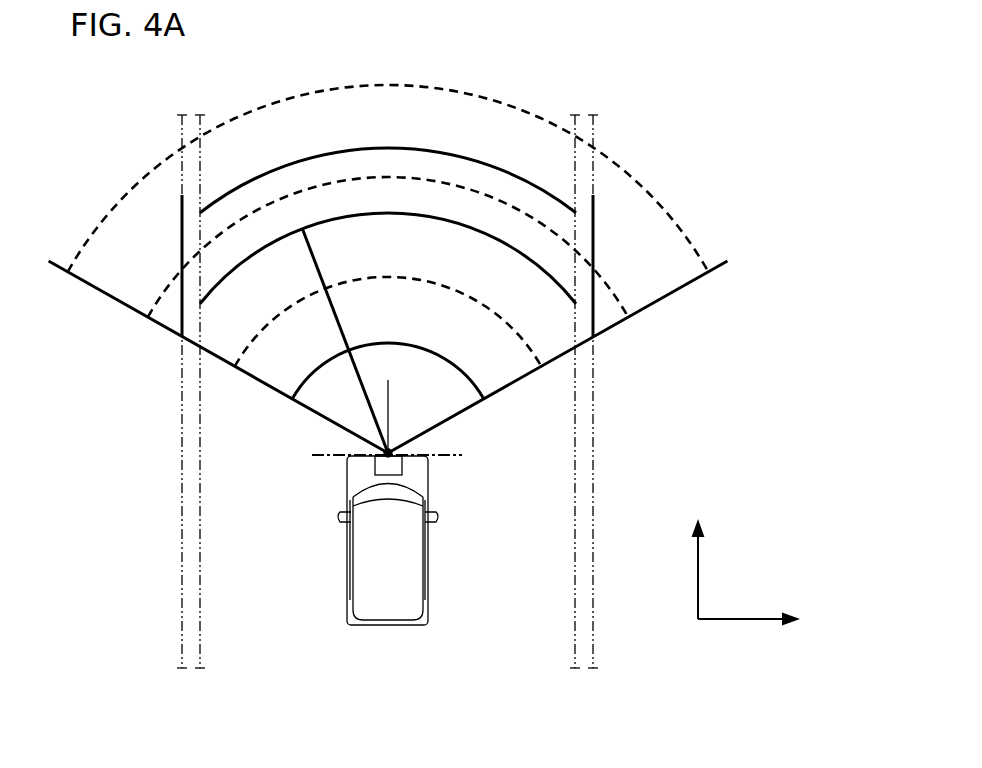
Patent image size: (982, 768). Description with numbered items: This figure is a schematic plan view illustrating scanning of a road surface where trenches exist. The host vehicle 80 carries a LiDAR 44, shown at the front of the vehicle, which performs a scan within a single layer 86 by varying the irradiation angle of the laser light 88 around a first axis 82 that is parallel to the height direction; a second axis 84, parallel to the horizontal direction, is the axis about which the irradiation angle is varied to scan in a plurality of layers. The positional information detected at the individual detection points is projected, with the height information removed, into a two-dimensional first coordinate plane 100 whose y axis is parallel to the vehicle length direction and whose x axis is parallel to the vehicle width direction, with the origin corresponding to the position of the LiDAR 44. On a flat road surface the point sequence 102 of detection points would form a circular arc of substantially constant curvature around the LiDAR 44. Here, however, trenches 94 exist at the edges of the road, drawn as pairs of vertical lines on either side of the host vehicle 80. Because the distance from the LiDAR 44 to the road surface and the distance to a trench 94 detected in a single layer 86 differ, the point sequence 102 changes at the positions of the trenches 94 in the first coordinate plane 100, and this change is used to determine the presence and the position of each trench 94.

The point sequence 102 is at (315, 152).
The laser light 88 is at (318, 263).
The layer 86 is at (516, 388).
The first axis 82 is at (390, 449).
The second axis 84 is at (326, 452).
The LiDAR 44 is at (376, 466).
The host vehicle 80 is at (428, 569).
The trench 94 is at (182, 457).
The first coordinate plane 100 is at (742, 620).